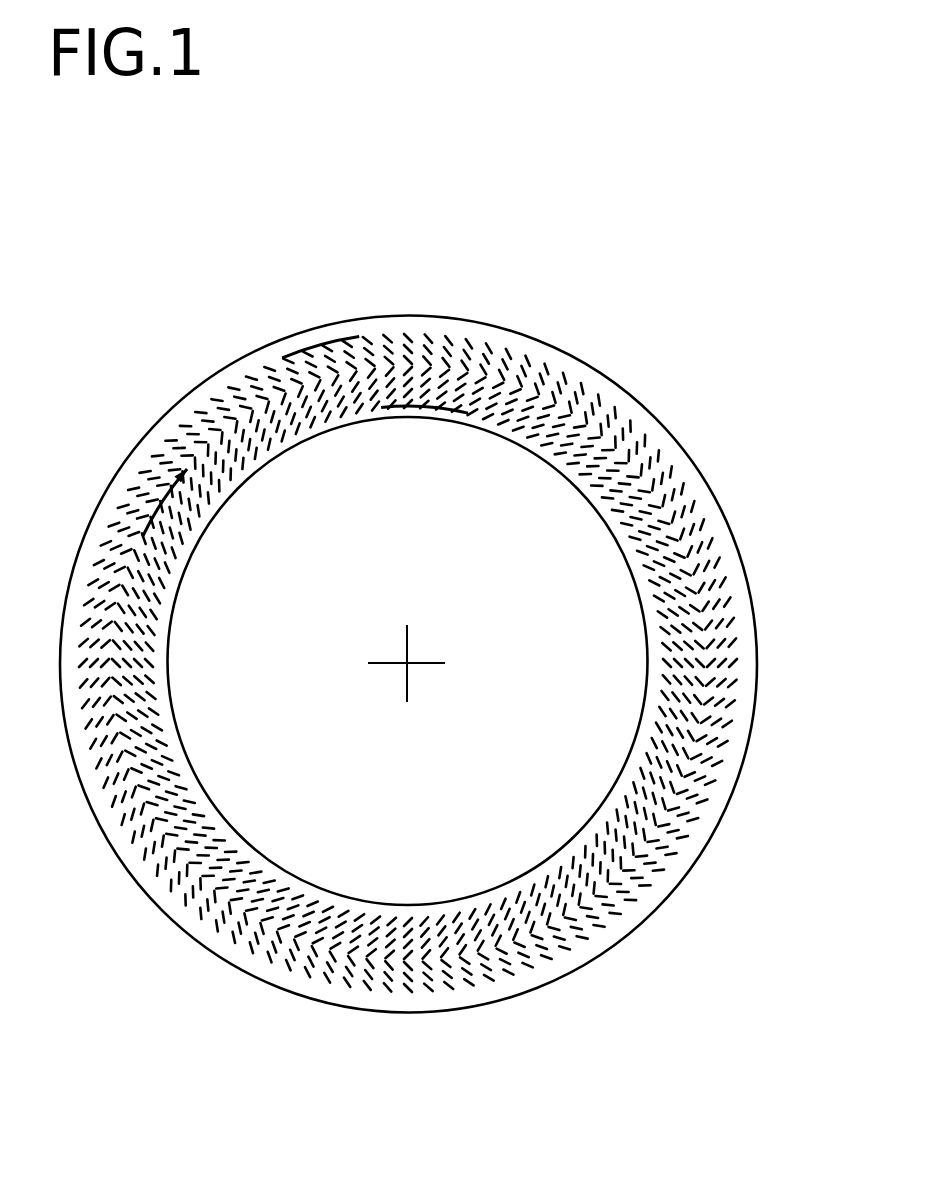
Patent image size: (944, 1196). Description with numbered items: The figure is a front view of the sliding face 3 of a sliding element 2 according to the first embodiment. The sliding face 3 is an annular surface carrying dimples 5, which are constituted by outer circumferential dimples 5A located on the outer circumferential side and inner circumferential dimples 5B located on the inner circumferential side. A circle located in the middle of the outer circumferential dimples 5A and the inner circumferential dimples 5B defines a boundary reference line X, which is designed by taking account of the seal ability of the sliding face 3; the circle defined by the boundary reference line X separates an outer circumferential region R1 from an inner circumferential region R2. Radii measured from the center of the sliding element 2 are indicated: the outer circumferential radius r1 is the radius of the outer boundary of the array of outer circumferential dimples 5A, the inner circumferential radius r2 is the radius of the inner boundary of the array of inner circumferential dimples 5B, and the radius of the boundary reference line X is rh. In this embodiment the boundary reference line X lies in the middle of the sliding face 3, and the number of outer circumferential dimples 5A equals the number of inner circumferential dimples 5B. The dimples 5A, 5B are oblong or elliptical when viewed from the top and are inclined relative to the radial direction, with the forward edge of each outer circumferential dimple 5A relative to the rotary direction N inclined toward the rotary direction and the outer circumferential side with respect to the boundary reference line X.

The sliding element 2 is at (748, 546).
The sliding face 3 is at (640, 425).
The dimples 5 is at (409, 688).
The outer circumferential dimples 5A is at (92, 728).
The inner circumferential dimples 5B is at (157, 728).
The outer circumferential region R1 is at (112, 508).
The inner circumferential region R2 is at (186, 539).
The outer circumferential radius r1 is at (315, 345).
The inner circumferential radius r2 is at (443, 408).
The radius of the boundary reference line rh is at (210, 443).
The boundary reference line X is at (188, 472).
The rotary direction N is at (652, 328).